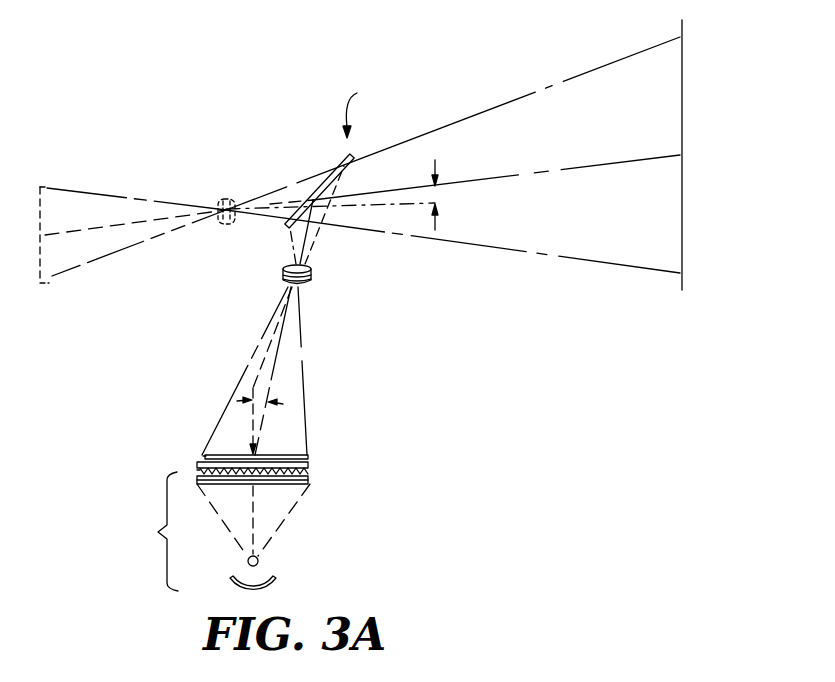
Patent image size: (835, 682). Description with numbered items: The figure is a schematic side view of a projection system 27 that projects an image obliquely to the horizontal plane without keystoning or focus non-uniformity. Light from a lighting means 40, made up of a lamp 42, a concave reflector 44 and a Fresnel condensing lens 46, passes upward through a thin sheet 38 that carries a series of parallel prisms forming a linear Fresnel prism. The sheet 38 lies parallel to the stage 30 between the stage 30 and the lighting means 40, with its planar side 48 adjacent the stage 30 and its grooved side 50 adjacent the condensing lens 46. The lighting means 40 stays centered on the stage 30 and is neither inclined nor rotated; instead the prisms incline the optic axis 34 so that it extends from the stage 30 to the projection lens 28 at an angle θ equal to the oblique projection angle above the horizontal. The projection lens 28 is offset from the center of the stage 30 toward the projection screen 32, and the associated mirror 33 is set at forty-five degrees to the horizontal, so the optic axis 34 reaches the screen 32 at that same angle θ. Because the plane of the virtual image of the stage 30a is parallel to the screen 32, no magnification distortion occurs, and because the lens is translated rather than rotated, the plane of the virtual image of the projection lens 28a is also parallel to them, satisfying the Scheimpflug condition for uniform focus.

The projection system 27 is at (368, 111).
The projection lens 28 is at (312, 277).
The virtual image of the projection lens 28a is at (226, 196).
The stage 30 is at (298, 455).
The virtual image of the stage 30a is at (47, 285).
The projection screen 32 is at (684, 30).
The mirror 33 is at (341, 160).
The optic axis 34 is at (570, 168).
The thin sheet 38 is at (308, 466).
The lighting means 40 is at (146, 531).
The lamp 42 is at (259, 558).
The concave reflector 44 is at (272, 580).
The Fresnel condensing lens 46 is at (308, 481).
The planar side 48 is at (202, 457).
The grooved side 50 is at (198, 471).